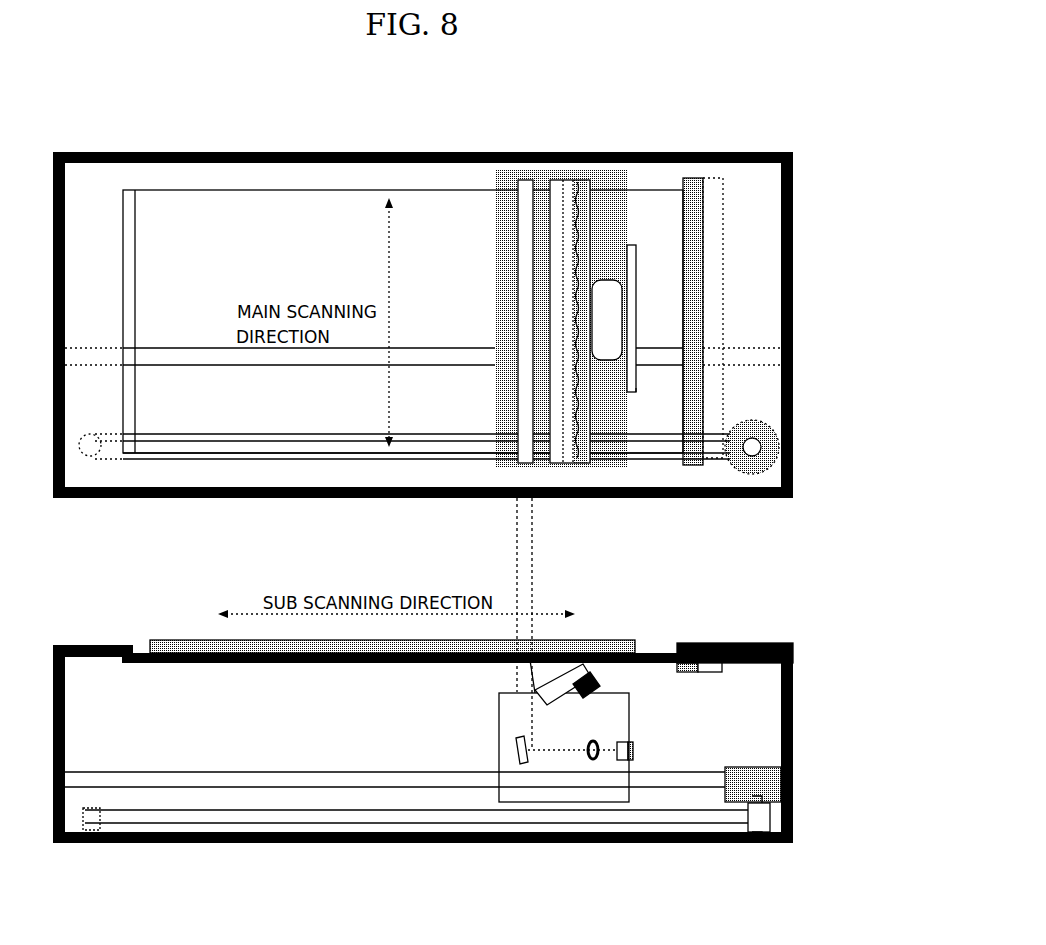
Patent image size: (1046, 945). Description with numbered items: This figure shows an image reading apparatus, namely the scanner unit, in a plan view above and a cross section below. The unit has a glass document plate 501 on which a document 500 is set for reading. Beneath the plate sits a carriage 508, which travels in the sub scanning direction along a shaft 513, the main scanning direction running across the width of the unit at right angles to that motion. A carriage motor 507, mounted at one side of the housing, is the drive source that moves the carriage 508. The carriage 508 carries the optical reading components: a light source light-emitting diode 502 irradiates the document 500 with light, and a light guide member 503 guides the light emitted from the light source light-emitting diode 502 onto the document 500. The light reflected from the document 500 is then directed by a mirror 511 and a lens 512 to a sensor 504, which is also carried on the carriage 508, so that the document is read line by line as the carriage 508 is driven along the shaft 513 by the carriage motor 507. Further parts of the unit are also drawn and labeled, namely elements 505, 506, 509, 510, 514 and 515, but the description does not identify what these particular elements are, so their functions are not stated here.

The document 500 is at (183, 638).
The glass document plate 501 is at (237, 210).
The light source light-emitting diode 502 is at (586, 205).
The light guide member 503 is at (560, 188).
The sensor 504 is at (629, 328).
The image sensor 505 is at (636, 392).
The light source 506 is at (503, 470).
The carriage motor 507 is at (752, 420).
The carriage 508 is at (495, 180).
The guide rail 509 is at (698, 202).
The guide member 510 is at (713, 244).
The mirror 511 is at (515, 750).
The lens 512 is at (603, 293).
The shaft 513 is at (738, 348).
The drive belt pulley 514 is at (760, 475).
The drive shaft 515 is at (700, 468).